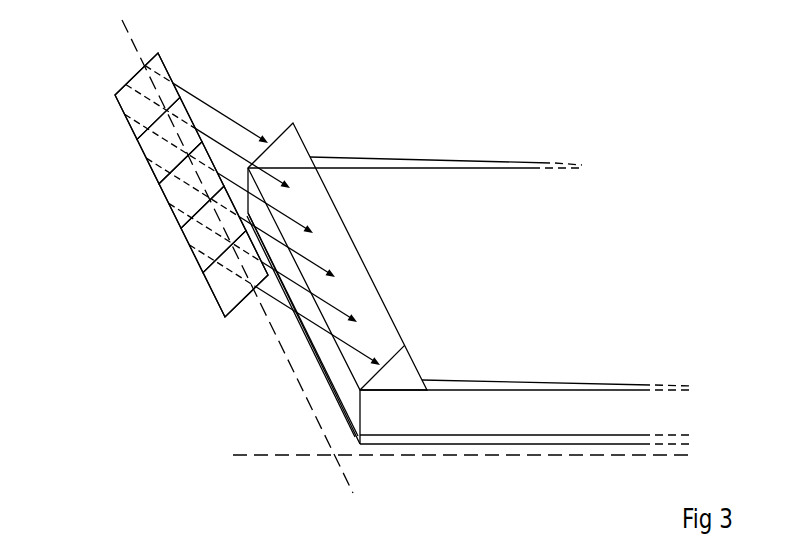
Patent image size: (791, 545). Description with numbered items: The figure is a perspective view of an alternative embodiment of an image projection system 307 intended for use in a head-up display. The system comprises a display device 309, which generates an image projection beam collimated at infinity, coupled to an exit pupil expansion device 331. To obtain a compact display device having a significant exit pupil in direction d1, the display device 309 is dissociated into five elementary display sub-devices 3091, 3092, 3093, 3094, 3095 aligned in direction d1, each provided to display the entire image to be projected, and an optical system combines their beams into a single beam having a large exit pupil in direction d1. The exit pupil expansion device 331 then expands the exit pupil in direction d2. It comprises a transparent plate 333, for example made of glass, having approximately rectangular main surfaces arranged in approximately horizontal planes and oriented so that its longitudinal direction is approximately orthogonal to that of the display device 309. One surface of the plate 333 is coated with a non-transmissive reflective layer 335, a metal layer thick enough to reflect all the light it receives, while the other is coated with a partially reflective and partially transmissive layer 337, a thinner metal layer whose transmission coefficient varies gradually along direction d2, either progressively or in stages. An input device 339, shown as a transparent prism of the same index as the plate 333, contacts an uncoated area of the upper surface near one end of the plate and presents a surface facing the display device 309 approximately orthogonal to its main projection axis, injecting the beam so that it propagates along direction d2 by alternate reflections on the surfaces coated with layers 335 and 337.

The image projection system 307 is at (243, 67).
The display device 309 is at (122, 83).
The display sub-device 3091 is at (135, 112).
The display sub-device 3092 is at (155, 158).
The display sub-device 3093 is at (178, 202).
The display sub-device 3094 is at (202, 247).
The display sub-device 3095 is at (223, 292).
The input device 339 is at (293, 142).
The exit pupil expansion device 331 is at (458, 155).
The transparent plate 333 is at (457, 420).
The non-transmissive reflective layer 335 is at (502, 438).
The partially reflective and partially transmissive layer 337 is at (542, 387).
The direction d1 is at (300, 388).
The direction d2 is at (388, 455).